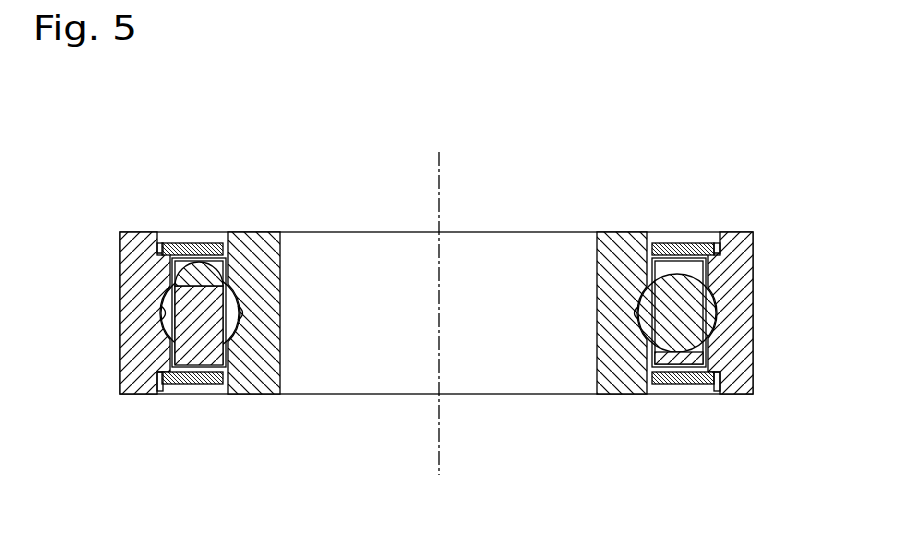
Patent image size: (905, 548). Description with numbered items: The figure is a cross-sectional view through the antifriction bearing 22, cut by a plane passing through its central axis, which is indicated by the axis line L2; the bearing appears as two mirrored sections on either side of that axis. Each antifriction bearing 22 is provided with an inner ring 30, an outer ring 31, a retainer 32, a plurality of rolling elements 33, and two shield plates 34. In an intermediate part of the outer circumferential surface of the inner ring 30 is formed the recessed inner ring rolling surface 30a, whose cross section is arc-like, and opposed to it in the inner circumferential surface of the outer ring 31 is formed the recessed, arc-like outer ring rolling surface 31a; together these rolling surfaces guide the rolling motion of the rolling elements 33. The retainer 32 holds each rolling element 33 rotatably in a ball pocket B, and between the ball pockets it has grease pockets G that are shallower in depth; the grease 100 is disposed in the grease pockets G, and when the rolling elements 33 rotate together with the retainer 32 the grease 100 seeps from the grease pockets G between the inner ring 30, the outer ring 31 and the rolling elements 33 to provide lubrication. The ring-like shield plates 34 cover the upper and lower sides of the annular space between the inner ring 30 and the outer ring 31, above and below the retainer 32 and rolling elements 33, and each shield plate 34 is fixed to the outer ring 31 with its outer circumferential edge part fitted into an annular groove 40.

The antifriction bearing 22 is at (727, 142).
The inner ring 30 is at (440, 319).
The inner ring rolling surface 30a is at (235, 322).
The outer ring 31 is at (747, 250).
The outer ring rolling surface 31a is at (163, 318).
The retainer 32 is at (262, 340).
The rolling element 33 is at (166, 297).
The shield plate 34 is at (192, 241).
The annular groove 40 is at (717, 233).
The grease 100 is at (201, 262).
The grease pocket G is at (166, 262).
The ball pocket B is at (673, 262).
The axis line L2 is at (440, 162).